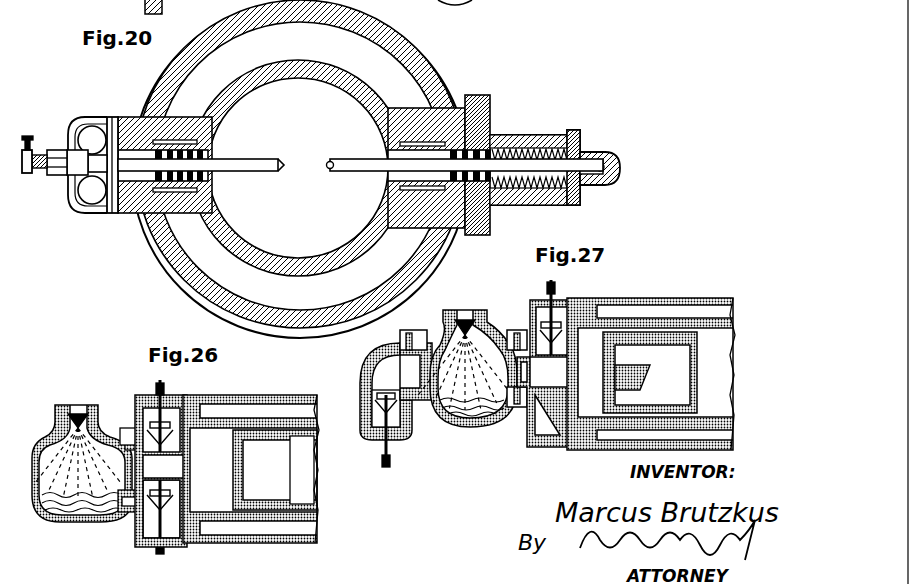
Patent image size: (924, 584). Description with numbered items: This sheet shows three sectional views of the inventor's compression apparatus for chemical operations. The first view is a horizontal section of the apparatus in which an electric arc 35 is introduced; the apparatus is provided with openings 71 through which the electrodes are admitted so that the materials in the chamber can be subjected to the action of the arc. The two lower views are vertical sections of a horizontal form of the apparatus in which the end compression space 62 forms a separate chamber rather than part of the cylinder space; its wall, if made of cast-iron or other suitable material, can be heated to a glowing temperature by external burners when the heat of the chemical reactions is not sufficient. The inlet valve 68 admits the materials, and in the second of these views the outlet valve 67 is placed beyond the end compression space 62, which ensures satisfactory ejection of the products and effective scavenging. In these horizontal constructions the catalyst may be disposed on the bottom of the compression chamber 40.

In FIG. 20, the electric arc 35 is at (327, 165).
In FIG. 20, the openings 71 is at (212, 152).
In FIG. 26, the compression chamber 40 is at (98, 517).
In FIG. 27, the compression chamber 40 is at (477, 422).
In FIG. 26, the end compression space 62 is at (84, 463).
In FIG. 27, the end compression space 62 is at (473, 368).
In FIG. 26, the outlet valve 67 is at (136, 510).
In FIG. 27, the outlet valve 67 is at (372, 407).
In FIG. 26, the inlet valve 68 is at (163, 455).
In FIG. 27, the inlet valve 68 is at (538, 362).